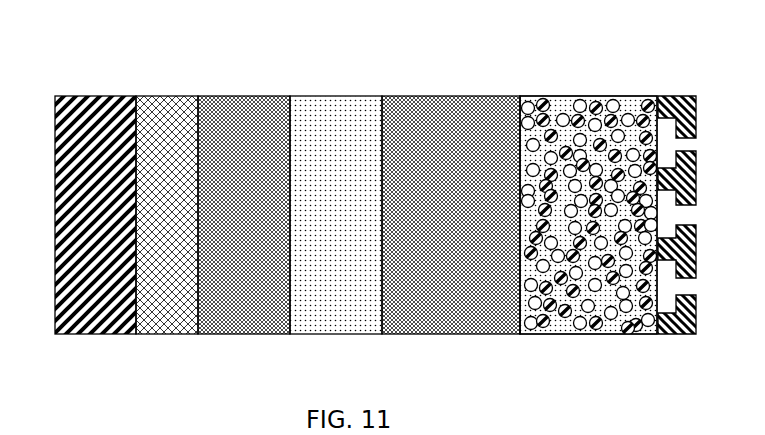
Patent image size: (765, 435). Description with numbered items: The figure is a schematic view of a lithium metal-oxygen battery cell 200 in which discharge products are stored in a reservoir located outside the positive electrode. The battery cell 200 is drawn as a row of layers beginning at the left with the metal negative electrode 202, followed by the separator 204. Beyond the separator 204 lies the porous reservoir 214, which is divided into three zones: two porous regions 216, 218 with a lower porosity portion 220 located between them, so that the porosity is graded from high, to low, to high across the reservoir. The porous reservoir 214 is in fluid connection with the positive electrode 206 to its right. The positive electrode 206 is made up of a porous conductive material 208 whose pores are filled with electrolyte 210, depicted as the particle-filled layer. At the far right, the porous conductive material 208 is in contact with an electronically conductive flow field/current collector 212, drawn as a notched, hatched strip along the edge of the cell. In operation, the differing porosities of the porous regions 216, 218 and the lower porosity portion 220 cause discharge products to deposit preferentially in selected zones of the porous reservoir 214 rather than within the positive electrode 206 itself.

The battery cell 200 is at (32, 66).
The metal negative electrode 202 is at (61, 88).
The separator 204 is at (150, 88).
The positive electrode 206 is at (524, 59).
The porous conductive material 208 is at (596, 194).
The electrolyte 210 is at (550, 88).
The electronically conductive flow field/current collector 212 is at (677, 88).
The porous reservoir 214 is at (381, 61).
The porous region 216 is at (235, 88).
The porous region 218 is at (423, 88).
The lower porosity portion 220 is at (305, 88).